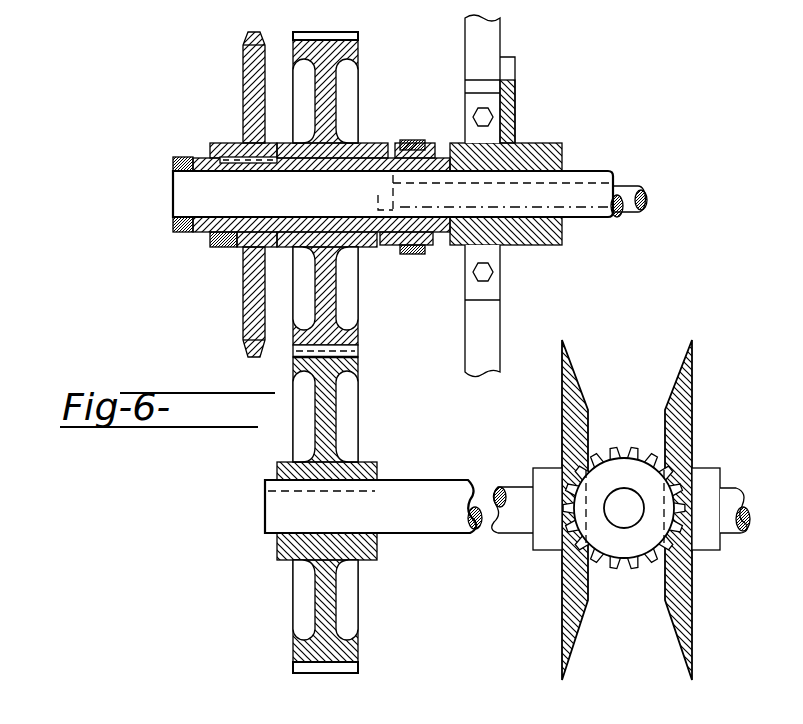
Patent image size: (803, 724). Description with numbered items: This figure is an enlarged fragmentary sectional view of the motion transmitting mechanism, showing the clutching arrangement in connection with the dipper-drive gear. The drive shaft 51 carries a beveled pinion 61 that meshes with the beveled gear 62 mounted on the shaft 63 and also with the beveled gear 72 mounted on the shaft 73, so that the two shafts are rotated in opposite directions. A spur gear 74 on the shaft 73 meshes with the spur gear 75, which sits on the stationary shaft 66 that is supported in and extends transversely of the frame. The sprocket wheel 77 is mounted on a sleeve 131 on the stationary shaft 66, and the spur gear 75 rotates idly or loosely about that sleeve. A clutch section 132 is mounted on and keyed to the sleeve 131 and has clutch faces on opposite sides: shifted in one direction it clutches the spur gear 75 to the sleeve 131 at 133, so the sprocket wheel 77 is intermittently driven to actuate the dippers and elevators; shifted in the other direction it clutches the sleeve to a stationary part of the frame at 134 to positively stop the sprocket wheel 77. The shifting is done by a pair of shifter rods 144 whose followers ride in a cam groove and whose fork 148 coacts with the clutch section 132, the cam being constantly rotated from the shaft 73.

The drive shaft 51 is at (624, 497).
The beveled pinion 61 is at (627, 572).
The beveled gear 62 is at (680, 656).
The shaft 63 is at (739, 532).
The stationary shaft 66 is at (578, 180).
The beveled gear 72 is at (562, 618).
The shaft 73 is at (512, 526).
The spur gear 74 is at (298, 651).
The spur gear 75 is at (357, 341).
The sprocket wheel 77 is at (243, 310).
The sleeve 131 is at (364, 156).
The clutch section 132 is at (402, 252).
The clutch face 133 is at (377, 200).
The clutch face on the frame 134 is at (458, 148).
The shifter rods 144 is at (640, 191).
The fork 148 is at (410, 140).